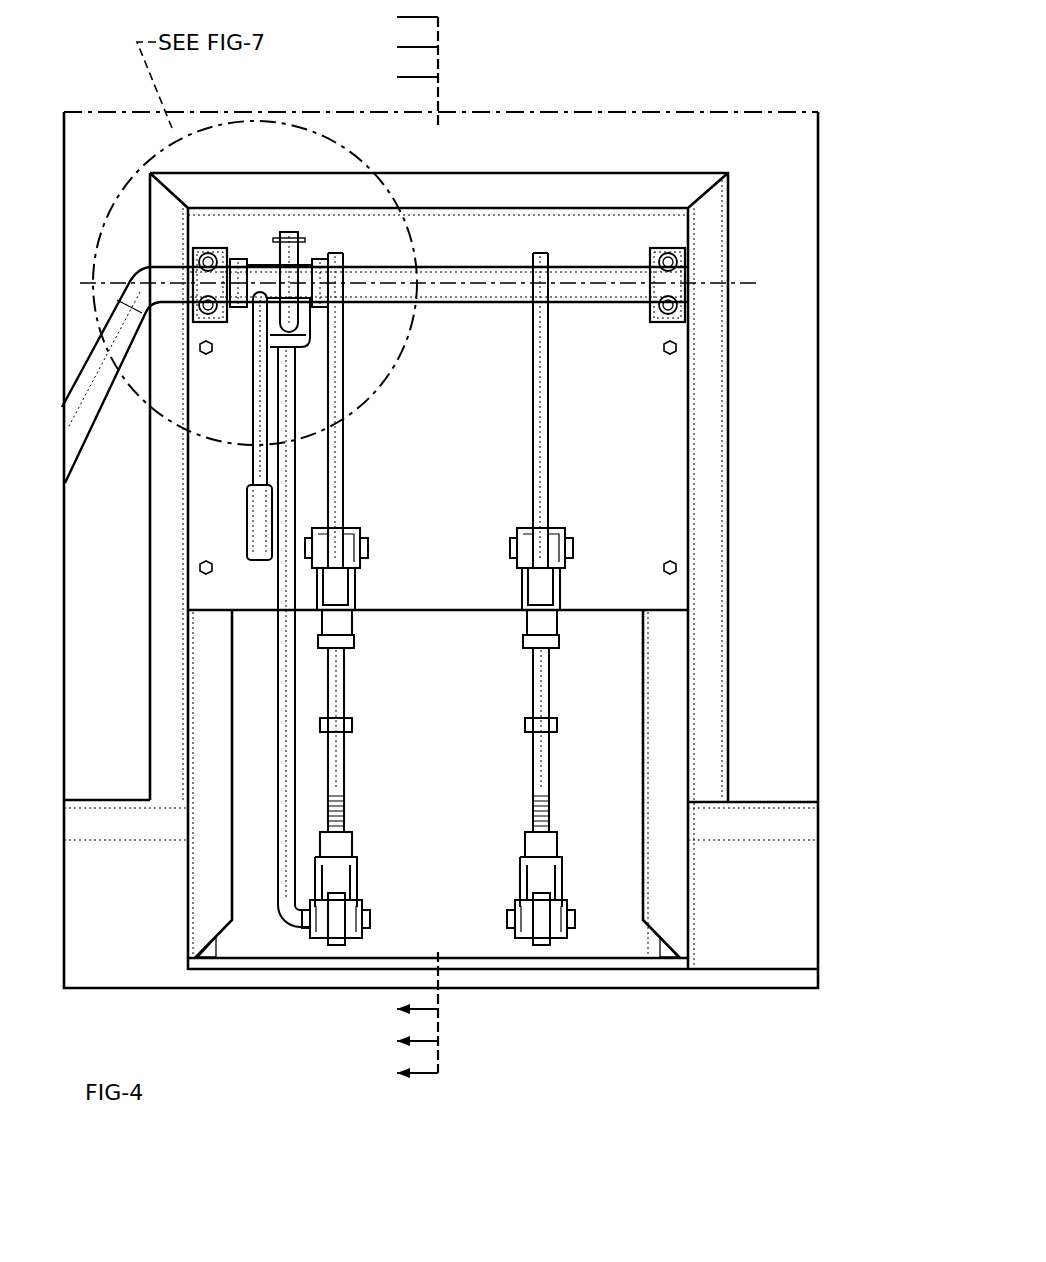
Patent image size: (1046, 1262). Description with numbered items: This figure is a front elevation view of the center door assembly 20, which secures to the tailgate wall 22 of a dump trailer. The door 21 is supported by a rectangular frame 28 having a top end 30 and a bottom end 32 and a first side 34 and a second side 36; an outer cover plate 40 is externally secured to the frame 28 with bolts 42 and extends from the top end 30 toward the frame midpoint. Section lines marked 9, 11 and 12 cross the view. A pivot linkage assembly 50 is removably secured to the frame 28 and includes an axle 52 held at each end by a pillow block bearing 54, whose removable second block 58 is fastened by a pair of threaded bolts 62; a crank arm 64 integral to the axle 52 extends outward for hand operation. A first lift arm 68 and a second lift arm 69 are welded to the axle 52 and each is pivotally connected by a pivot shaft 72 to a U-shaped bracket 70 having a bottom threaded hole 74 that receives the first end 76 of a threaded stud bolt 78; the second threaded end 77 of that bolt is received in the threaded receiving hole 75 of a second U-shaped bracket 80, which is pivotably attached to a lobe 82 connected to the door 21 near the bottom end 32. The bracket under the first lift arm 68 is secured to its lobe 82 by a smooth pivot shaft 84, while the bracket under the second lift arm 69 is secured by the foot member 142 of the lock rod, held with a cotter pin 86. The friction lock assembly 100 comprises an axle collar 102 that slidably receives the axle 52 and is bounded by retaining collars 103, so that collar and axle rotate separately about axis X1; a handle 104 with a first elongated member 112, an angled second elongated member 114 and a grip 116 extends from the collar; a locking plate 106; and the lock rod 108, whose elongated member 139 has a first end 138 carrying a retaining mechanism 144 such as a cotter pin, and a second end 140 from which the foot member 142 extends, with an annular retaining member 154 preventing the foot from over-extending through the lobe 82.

The section line 9 is at (407, 543).
The section line 11 is at (401, 544).
The section line 12 is at (401, 545).
The door assembly 20 is at (625, 145).
The door 21 is at (483, 925).
The tailgate wall 22 is at (788, 166).
The rectangular frame 28 is at (547, 182).
The top end 30 is at (551, 121).
The bottom end 32 is at (612, 972).
The first side 34 is at (186, 762).
The second side 36 is at (694, 762).
The outer cover plate 40 is at (638, 418).
The bolts 42 is at (206, 355).
The pivot linkage assembly 50 is at (578, 522).
The axle 52 is at (577, 304).
The pillow block bearing 54 is at (188, 250).
The second block 58 is at (436, 284).
The threaded bolts 62 is at (204, 258).
The crank arm 64 is at (118, 380).
The first lift arm 68 is at (550, 403).
The second lift arm 69 is at (346, 440).
The U-shaped bracket 70 is at (358, 585).
The pivot shaft 72 is at (370, 548).
The bottom threaded hole 74 is at (355, 649).
The threaded receiving hole 75 is at (353, 836).
The first end 76 is at (330, 655).
The second threaded end 77 is at (346, 816).
The threaded stud bolt 78 is at (353, 725).
The second U-shaped bracket 80 is at (359, 880).
The lobe 82 is at (338, 946).
The smooth pivot shaft 84 is at (577, 918).
The cotter pin 86 is at (372, 918).
The friction lock assembly 100 is at (322, 350).
The axle collar 102 is at (268, 260).
The retaining collars 103 is at (247, 258).
The handle 104 is at (245, 497).
The locking plate 106 is at (316, 331).
The lock rod 108 is at (365, 637).
The first elongated member 112 is at (270, 373).
The second elongated member 114 is at (258, 470).
The grip 116 is at (252, 525).
The first end 138 is at (290, 228).
The elongated member 139 is at (365, 637).
The second end 140 is at (291, 637).
The foot member 142 is at (313, 926).
The retaining mechanism 144 is at (301, 237).
The annular retaining member 154 is at (333, 940).
The axis X1 is at (512, 287).